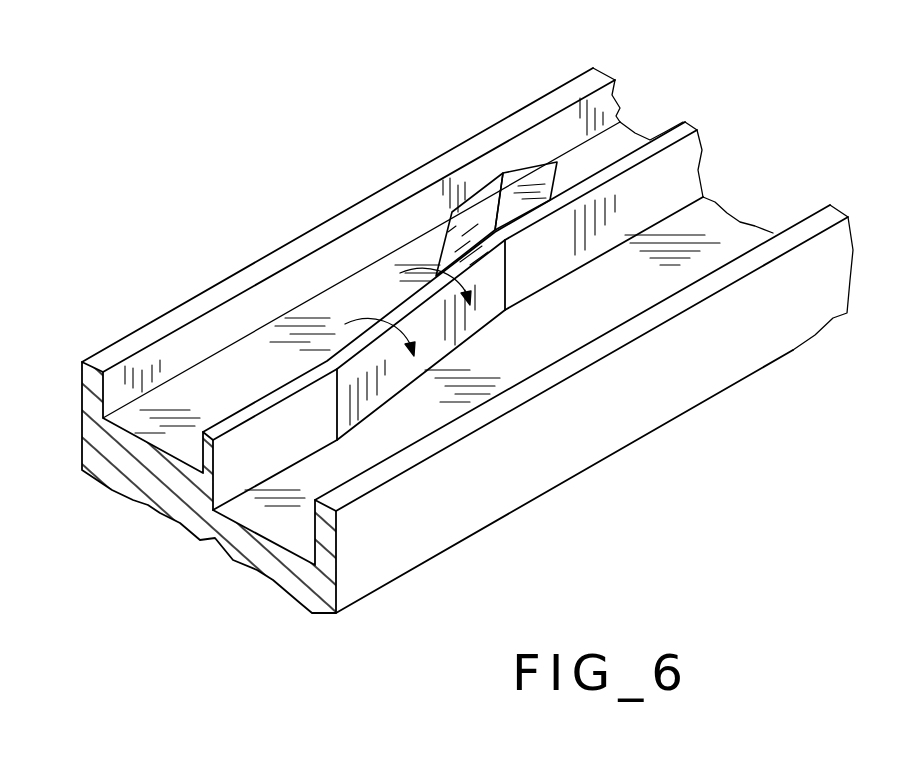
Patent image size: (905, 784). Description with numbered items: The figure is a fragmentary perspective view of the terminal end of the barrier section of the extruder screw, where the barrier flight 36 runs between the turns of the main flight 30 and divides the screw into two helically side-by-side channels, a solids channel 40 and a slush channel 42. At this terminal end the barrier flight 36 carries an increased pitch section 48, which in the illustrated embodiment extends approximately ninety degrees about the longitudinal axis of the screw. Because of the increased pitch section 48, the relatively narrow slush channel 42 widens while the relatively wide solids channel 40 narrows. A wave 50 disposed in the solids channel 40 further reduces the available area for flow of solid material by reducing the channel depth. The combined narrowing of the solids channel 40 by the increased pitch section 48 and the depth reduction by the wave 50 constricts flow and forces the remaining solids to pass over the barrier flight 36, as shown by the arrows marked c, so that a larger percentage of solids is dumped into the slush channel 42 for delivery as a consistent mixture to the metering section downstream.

The main flight 30 is at (599, 68).
The barrier flight 36 is at (686, 121).
The solids channel 40 is at (623, 140).
The slush channel 42 is at (713, 233).
The increased pitch section 48 is at (407, 303).
The wave 50 is at (520, 192).